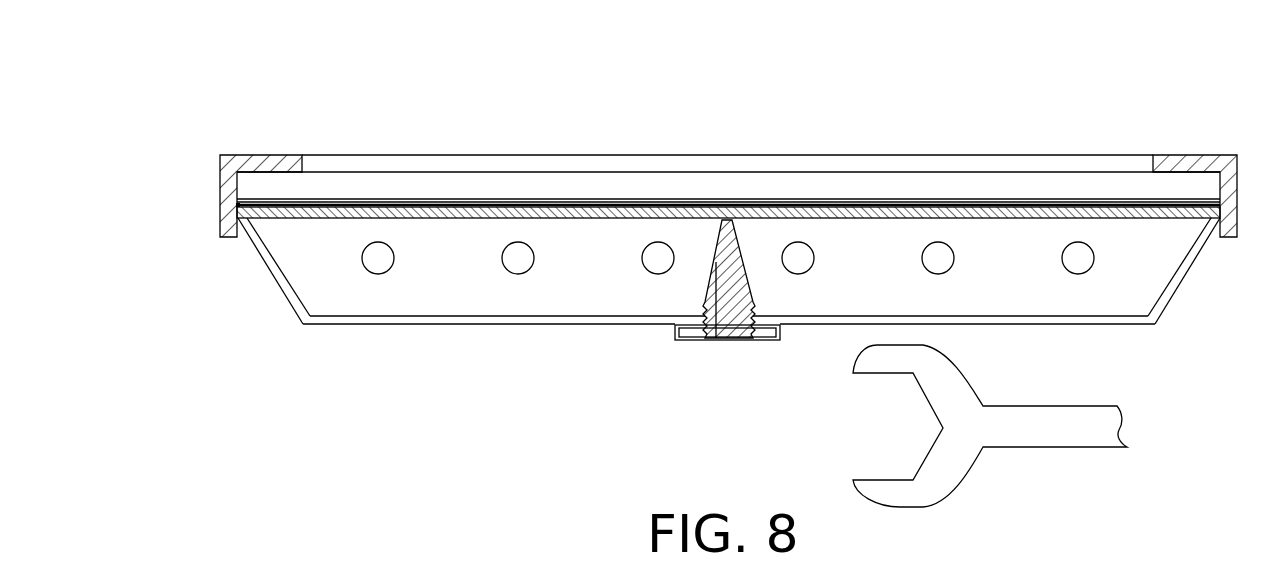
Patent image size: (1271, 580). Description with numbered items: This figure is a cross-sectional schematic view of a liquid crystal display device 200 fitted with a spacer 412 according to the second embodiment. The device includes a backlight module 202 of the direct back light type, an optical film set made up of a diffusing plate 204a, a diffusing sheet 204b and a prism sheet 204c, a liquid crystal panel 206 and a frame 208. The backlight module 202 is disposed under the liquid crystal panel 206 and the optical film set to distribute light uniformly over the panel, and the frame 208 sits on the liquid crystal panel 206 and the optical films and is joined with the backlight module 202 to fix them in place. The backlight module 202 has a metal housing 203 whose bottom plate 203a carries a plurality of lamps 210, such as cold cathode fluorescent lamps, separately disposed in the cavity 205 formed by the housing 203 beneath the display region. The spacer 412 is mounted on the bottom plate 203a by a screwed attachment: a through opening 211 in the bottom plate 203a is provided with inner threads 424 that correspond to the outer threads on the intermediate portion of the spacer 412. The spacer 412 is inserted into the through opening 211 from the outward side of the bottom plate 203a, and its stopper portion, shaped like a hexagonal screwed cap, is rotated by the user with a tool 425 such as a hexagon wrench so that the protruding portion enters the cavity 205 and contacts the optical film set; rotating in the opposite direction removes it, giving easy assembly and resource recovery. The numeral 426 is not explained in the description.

The liquid crystal display device 200 is at (106, 88).
The backlight module 202 is at (676, 309).
The housing 203 is at (685, 352).
The bottom plate 203a is at (470, 316).
The diffusing plate 204a is at (240, 212).
The diffusing sheet 204b is at (238, 205).
The prism sheet 204c is at (240, 200).
The cavity 205 is at (297, 282).
The liquid crystal panel 206 is at (253, 185).
The frame 208 is at (222, 165).
The lamps 210 is at (520, 258).
The through opening 211 is at (755, 316).
The spacer 412 is at (705, 338).
The inner threads 424 is at (703, 303).
The tool 425 is at (1043, 437).
The nut 426 is at (742, 340).